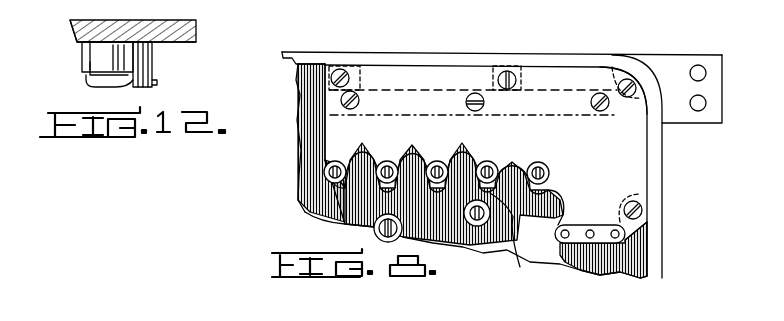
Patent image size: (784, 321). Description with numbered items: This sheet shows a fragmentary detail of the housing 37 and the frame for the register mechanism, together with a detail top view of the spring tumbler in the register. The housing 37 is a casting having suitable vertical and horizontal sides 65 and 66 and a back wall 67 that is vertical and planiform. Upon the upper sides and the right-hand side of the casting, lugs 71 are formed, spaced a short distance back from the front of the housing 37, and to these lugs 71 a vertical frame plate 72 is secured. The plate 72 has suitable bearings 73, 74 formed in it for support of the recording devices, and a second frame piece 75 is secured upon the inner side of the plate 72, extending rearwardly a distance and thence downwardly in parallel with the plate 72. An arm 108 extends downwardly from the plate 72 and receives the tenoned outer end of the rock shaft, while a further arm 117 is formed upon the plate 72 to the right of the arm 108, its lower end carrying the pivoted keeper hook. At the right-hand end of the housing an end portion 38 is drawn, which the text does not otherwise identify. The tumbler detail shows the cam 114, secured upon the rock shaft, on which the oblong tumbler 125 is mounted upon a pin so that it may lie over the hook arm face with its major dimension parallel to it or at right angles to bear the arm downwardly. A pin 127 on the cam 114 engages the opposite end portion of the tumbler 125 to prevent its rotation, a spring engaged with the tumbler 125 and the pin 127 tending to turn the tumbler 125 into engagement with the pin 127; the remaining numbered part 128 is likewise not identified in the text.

In FIG. 8, the housing 37 is at (590, 270).
In FIG. 8, the end plate 38 is at (706, 110).
In FIG. 8, the vertical side 65 is at (655, 243).
In FIG. 8, the horizontal side 66 is at (466, 55).
In FIG. 8, the back wall 67 is at (510, 248).
In FIG. 8, the lugs 71 is at (355, 76).
In FIG. 8, the vertical frame plate 72 is at (630, 132).
In FIG. 8, the bearing 73 is at (528, 165).
In FIG. 8, the bearing 74 is at (612, 228).
In FIG. 8, the second frame piece 75 is at (420, 104).
In FIG. 8, the arm 108 is at (380, 207).
In FIG. 8, the arm 117 is at (522, 238).
In FIG. 12, the cam 114 is at (196, 38).
In FIG. 12, the tumbler 125 is at (88, 55).
In FIG. 12, the pin 127 is at (152, 58).
In FIG. 12, the hook 128 is at (84, 80).